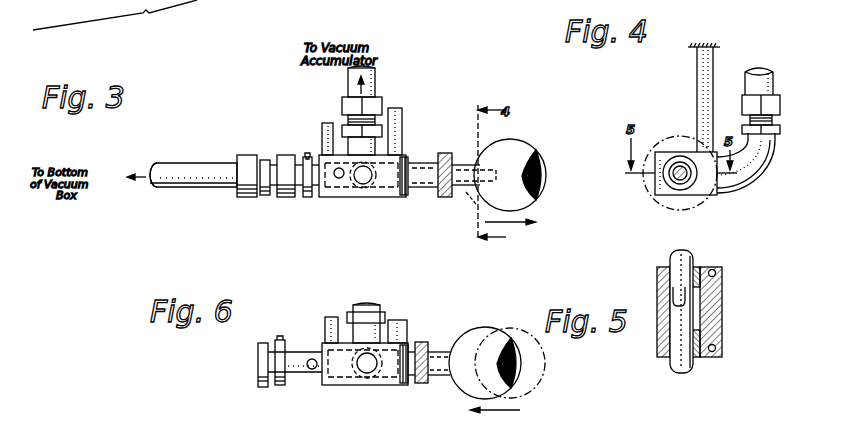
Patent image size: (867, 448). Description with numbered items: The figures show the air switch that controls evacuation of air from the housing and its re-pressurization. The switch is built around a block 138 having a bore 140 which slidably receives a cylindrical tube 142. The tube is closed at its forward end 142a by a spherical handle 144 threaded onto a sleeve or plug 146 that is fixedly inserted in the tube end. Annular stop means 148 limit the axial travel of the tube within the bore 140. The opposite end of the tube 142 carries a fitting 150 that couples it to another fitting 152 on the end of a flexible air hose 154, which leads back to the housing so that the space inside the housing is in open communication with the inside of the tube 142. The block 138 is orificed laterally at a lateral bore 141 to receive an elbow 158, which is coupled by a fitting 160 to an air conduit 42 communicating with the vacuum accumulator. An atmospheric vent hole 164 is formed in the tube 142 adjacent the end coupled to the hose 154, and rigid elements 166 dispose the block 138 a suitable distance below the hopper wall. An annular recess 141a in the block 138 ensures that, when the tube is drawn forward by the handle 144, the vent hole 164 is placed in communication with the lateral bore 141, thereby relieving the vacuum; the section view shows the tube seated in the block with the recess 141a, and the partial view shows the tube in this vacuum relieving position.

In FIG. 4, the air conduit 42 is at (774, 76).
In FIG. 3, the block 138 is at (380, 197).
In FIG. 3, the bore 140 is at (396, 150).
In FIG. 4, the lateral bore 141 is at (697, 195).
In FIG. 5, the lateral bore 141 is at (712, 320).
In FIG. 6, the lateral bore 141 is at (386, 385).
In FIG. 5, the annular recess 141a is at (670, 330).
In FIG. 6, the annular recess 141a is at (346, 378).
In FIG. 3, the cylindrical tube 142 is at (420, 188).
In FIG. 3, the forward end 142a is at (462, 168).
In FIG. 3, the spherical handle 144 is at (512, 147).
In FIG. 3, the sleeve or plug 146 is at (468, 203).
In FIG. 3, the annular stop means 148 is at (445, 153).
In FIG. 3, the fitting 150 is at (288, 155).
In FIG. 3, the fitting 152 is at (245, 155).
In FIG. 3, the flexible air hose 154 is at (200, 163).
In FIG. 4, the elbow 158 is at (755, 178).
In FIG. 4, the fitting 160 is at (754, 115).
In FIG. 3, the atmospheric vent hole 164 is at (339, 178).
In FIG. 5, the atmospheric vent hole 164 is at (672, 295).
In FIG. 6, the atmospheric vent hole 164 is at (312, 370).
In FIG. 3, the rigid elements 166 is at (322, 135).